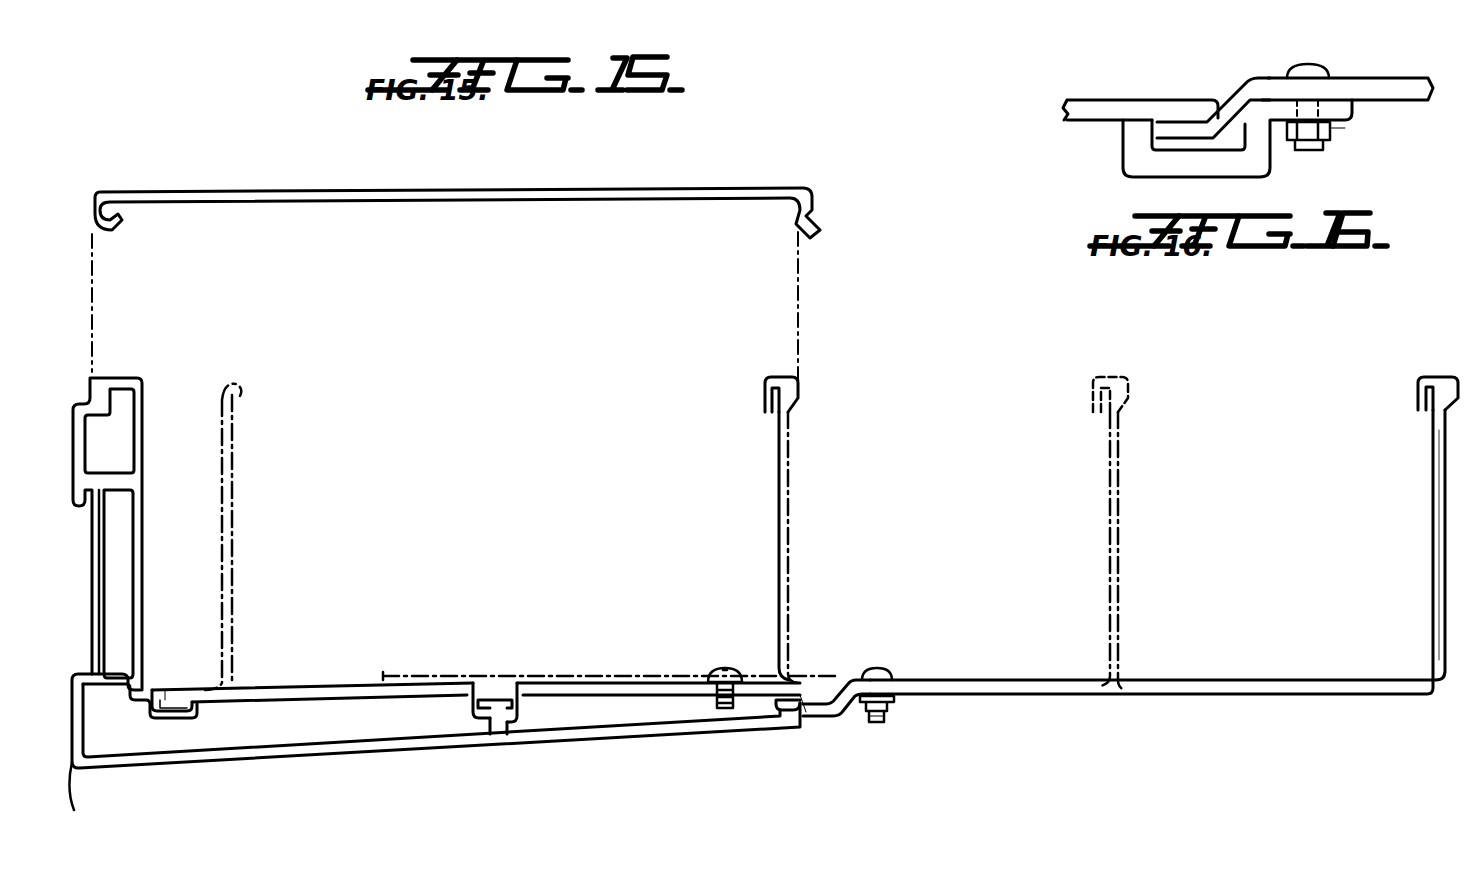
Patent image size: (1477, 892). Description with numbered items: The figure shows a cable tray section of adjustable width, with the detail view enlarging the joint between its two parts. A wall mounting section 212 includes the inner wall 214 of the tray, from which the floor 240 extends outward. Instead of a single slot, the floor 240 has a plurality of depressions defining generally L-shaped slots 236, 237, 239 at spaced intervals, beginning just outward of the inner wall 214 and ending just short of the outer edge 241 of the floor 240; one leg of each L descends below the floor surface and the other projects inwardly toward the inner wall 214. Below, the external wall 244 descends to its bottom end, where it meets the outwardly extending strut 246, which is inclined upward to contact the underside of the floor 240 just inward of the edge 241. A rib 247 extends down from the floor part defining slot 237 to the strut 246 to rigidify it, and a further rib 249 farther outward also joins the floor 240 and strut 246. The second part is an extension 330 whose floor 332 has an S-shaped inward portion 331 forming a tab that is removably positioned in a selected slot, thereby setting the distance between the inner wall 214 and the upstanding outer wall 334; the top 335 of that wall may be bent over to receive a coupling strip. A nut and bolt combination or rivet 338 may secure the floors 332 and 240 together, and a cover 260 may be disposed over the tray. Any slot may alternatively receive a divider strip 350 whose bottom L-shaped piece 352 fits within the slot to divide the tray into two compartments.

In FIG. 15, the wall mounting section 212 is at (76, 390).
In FIG. 15, the inner wall 214 is at (144, 535).
In FIG. 15, the slot 236 is at (190, 712).
In FIG. 15, the slot 237 is at (500, 690).
In FIG. 15, the slot 239 is at (810, 697).
In FIG. 16, the slot 239 is at (1170, 122).
In FIG. 15, the floor 240 is at (316, 686).
In FIG. 16, the floor 240 is at (1100, 100).
In FIG. 15, the outer edge 241 is at (905, 700).
In FIG. 16, the outer edge 241 is at (1350, 114).
In FIG. 15, the external wall 244 is at (78, 800).
In FIG. 15, the strut 246 is at (265, 760).
In FIG. 15, the rib 247 is at (505, 727).
In FIG. 15, the rib 249 is at (788, 714).
In FIG. 15, the cover 260 is at (338, 158).
In FIG. 15, the extension 330 is at (802, 488).
In FIG. 15, the inward portion 331 is at (826, 716).
In FIG. 16, the inward portion 331 is at (1240, 100).
In FIG. 15, the floor 332 is at (1204, 687).
In FIG. 16, the floor 332 is at (1362, 78).
In FIG. 15, the outer wall 334 is at (1432, 536).
In FIG. 15, the top 335 is at (782, 376).
In FIG. 15, the nut and bolt combination 338 is at (882, 682).
In FIG. 16, the nut and bolt combination 338 is at (1327, 46).
In FIG. 15, the cable tray divider strip 350 is at (240, 517).
In FIG. 15, the L-shaped piece 352 is at (180, 692).